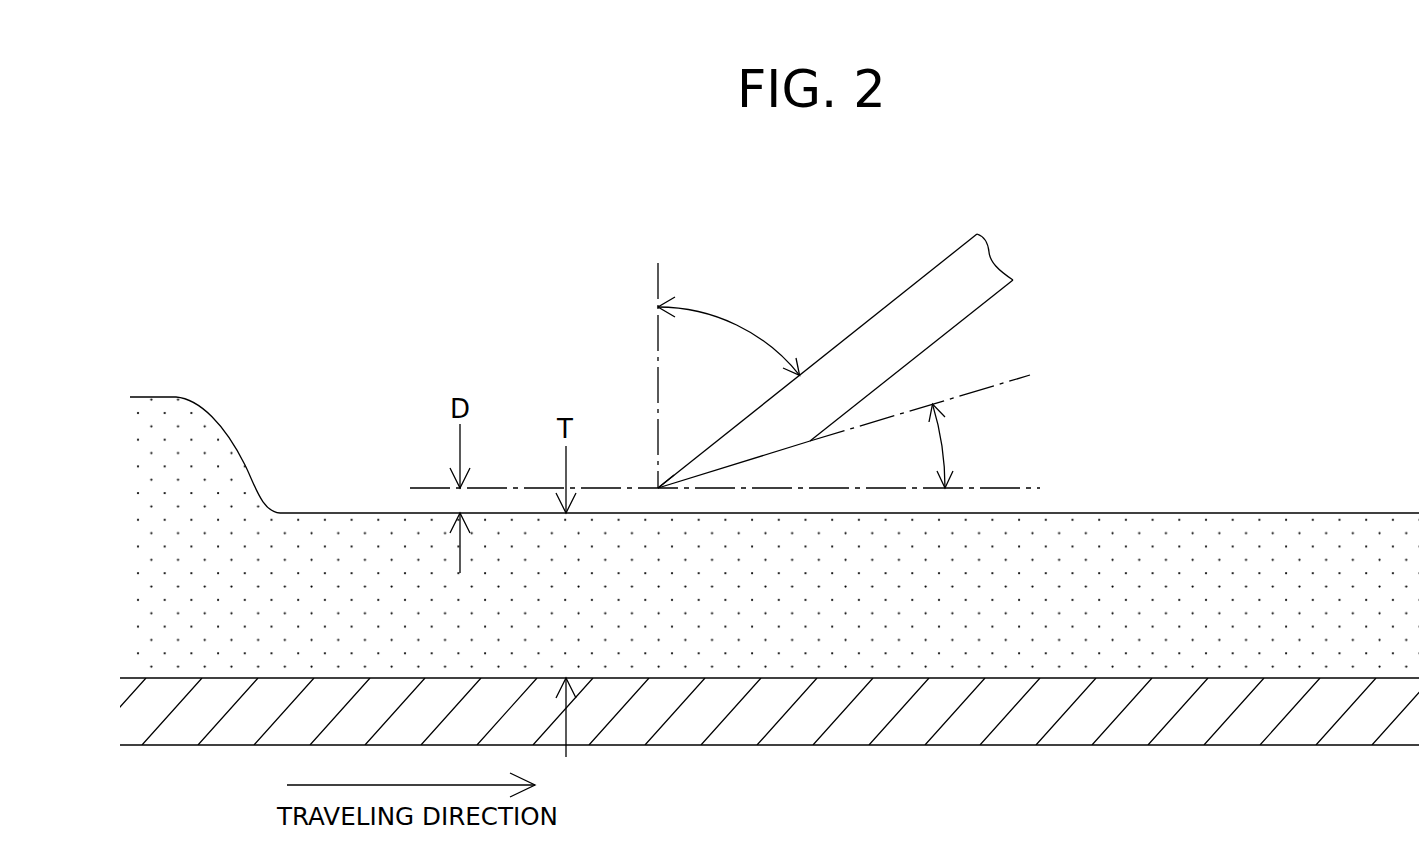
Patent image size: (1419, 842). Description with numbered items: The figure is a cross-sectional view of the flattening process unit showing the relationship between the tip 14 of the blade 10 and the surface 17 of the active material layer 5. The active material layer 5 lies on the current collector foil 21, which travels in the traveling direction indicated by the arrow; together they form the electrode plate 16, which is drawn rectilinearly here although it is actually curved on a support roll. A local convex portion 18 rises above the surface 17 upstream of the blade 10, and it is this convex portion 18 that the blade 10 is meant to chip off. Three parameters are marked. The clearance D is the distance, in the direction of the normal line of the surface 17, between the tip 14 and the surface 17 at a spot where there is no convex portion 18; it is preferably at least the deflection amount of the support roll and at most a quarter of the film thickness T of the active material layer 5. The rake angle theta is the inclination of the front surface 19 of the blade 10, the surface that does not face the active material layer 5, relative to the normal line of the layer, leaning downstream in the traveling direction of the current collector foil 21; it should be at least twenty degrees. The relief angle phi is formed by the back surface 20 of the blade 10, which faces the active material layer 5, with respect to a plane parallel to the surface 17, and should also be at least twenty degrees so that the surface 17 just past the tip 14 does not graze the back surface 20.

The active material layer 5 is at (774, 508).
The blade 10 is at (799, 495).
The tip 14 is at (658, 488).
The electrode plate 16 is at (842, 487).
The surface 17 is at (1095, 513).
The convex portion 18 is at (172, 427).
The front surface 19 is at (848, 333).
The back surface 20 is at (750, 463).
The current collector foil 21 is at (1096, 728).